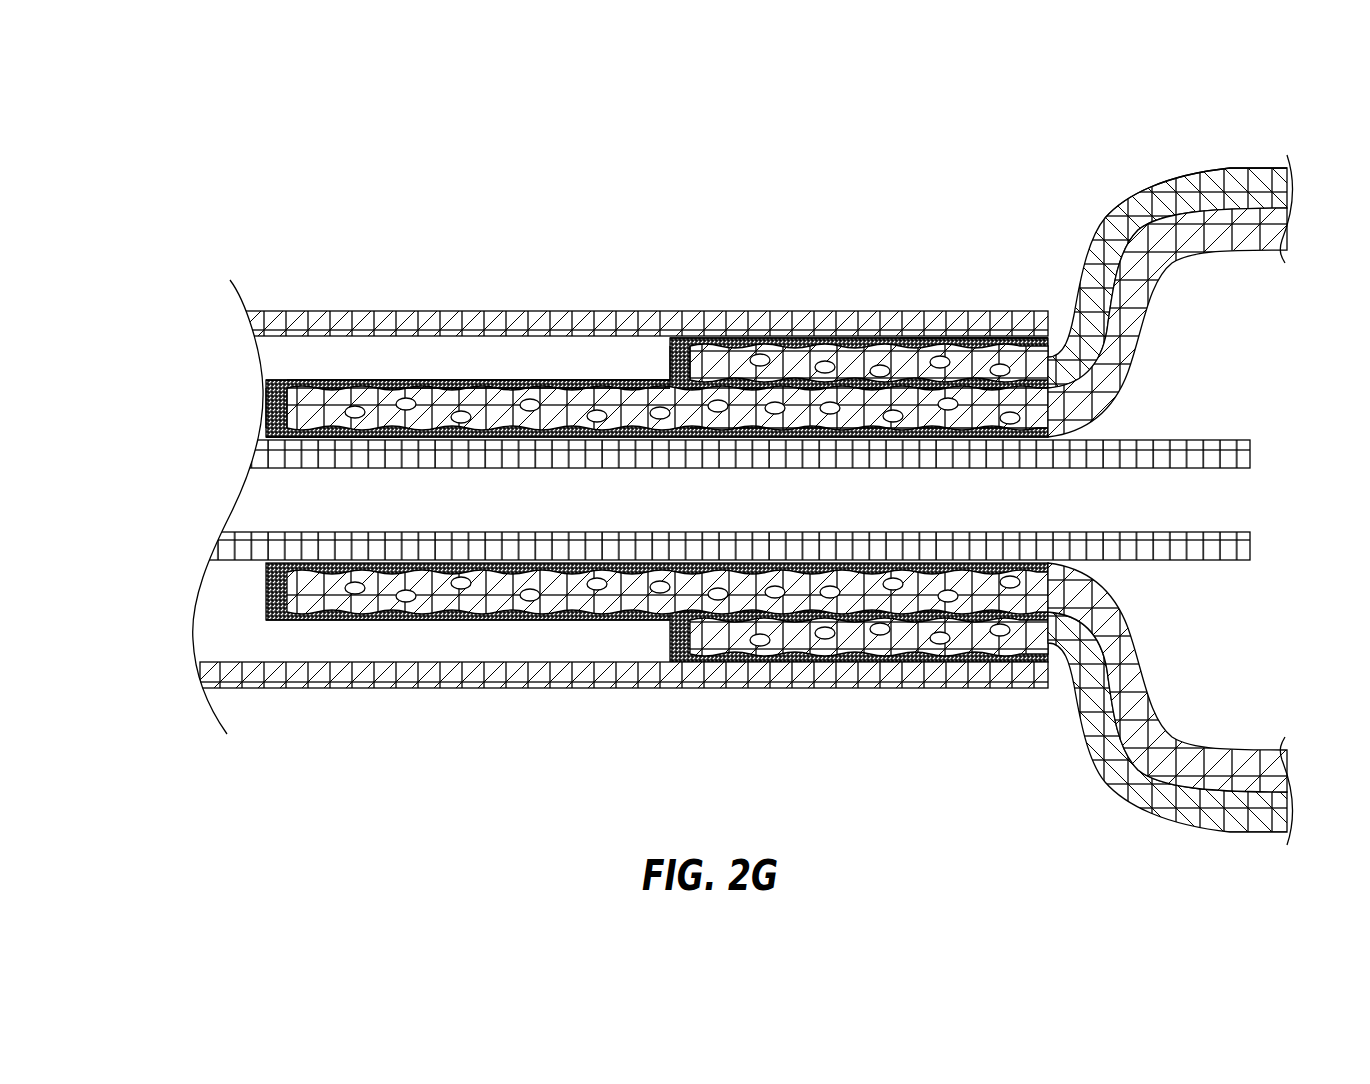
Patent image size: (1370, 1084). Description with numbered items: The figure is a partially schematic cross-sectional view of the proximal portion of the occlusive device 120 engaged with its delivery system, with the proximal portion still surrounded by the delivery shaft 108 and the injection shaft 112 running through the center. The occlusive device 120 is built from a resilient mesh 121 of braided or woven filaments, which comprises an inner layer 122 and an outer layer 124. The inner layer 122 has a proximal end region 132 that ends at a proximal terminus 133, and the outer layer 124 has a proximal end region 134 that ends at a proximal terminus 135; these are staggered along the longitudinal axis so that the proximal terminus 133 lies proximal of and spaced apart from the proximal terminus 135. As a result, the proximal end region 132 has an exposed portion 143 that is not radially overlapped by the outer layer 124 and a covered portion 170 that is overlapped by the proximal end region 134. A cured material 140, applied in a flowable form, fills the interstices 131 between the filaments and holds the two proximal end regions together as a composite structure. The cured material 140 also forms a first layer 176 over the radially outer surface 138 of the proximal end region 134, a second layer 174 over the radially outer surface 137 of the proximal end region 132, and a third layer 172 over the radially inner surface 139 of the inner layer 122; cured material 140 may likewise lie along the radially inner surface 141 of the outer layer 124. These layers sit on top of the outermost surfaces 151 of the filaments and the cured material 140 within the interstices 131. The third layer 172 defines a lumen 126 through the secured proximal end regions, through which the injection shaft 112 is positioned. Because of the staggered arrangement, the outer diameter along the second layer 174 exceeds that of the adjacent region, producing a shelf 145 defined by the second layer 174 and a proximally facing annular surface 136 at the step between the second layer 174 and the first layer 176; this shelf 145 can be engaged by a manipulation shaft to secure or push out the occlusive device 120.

The delivery shaft 108 is at (288, 311).
The injection shaft 112 is at (1178, 440).
The occlusive device 120 is at (1205, 475).
The mesh 121 is at (1218, 168).
The inner layer 122 is at (1145, 290).
The outer layer 124 is at (1182, 187).
The lumen 126 is at (1053, 564).
The interstices 131 is at (357, 598).
The proximal end region of the inner layer 132 is at (553, 405).
The proximal terminus of the inner layer 133 is at (277, 406).
The proximal end region of the outer layer 134 is at (805, 355).
The proximal terminus of the outer layer 135 is at (670, 368).
The proximally facing annular surface 136 is at (668, 640).
The radially outer surface of the proximal end region of the inner layer 137 is at (442, 380).
The radially outer surface of the proximal end region of the outer layer 138 is at (885, 338).
The radially inner surface of the inner layer 139 is at (503, 430).
The cured material 140 is at (676, 357).
The radially inner surface of the outer layer 141 is at (843, 390).
The exposed portion 143 is at (380, 393).
The shelf 145 is at (503, 384).
The outermost surfaces 151 is at (402, 617).
The covered portion 170 is at (923, 412).
The third layer 172 is at (325, 439).
The second layer 174 is at (327, 392).
The first layer 176 is at (1000, 337).